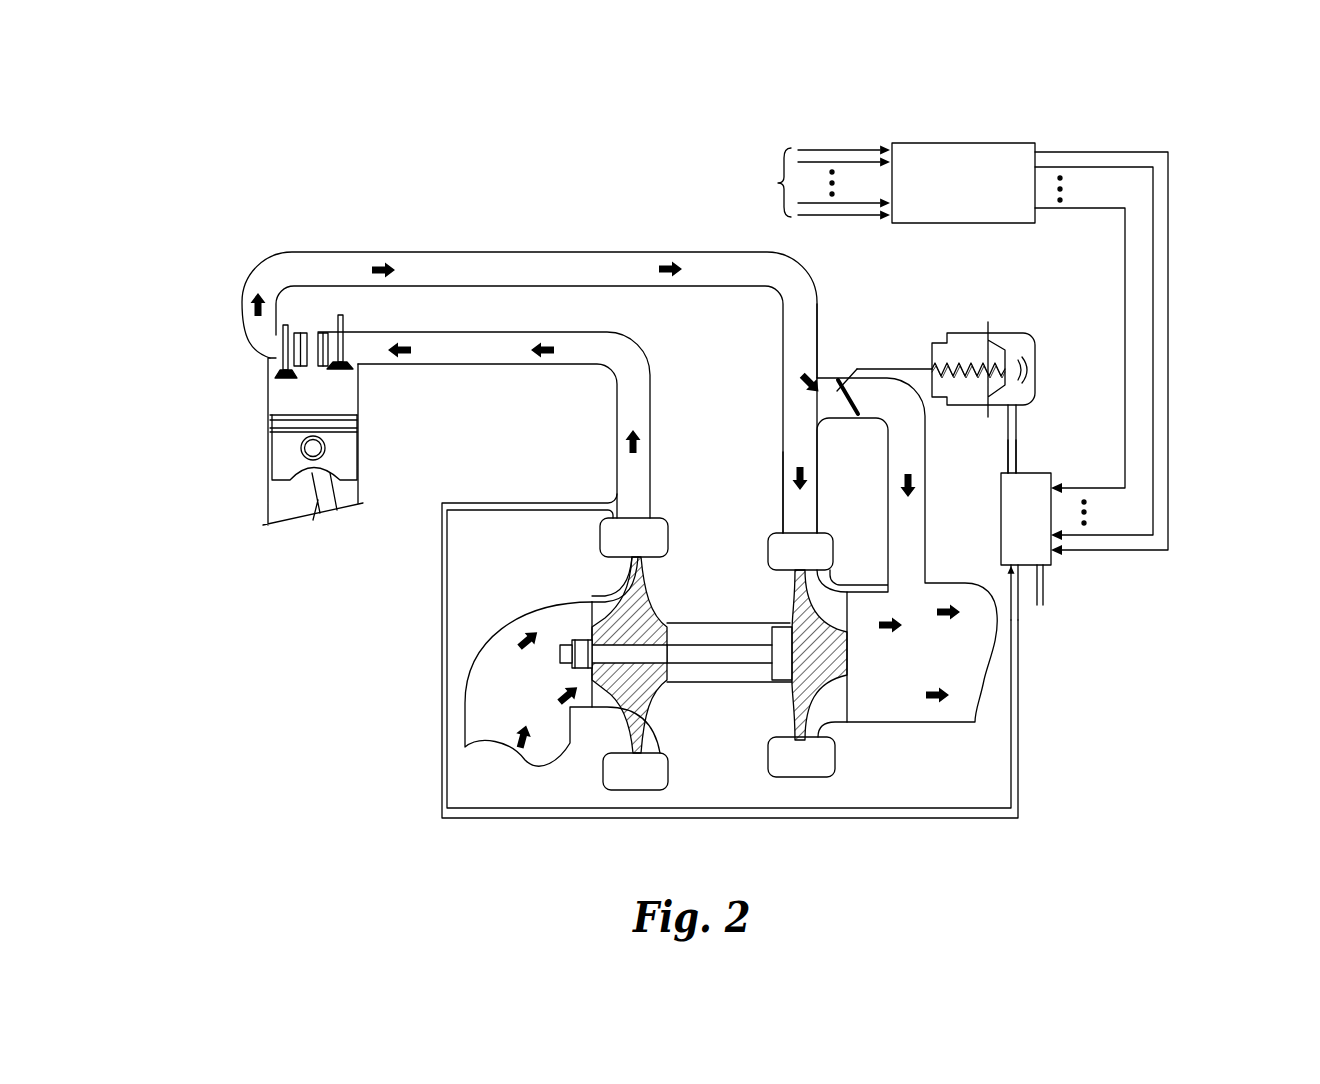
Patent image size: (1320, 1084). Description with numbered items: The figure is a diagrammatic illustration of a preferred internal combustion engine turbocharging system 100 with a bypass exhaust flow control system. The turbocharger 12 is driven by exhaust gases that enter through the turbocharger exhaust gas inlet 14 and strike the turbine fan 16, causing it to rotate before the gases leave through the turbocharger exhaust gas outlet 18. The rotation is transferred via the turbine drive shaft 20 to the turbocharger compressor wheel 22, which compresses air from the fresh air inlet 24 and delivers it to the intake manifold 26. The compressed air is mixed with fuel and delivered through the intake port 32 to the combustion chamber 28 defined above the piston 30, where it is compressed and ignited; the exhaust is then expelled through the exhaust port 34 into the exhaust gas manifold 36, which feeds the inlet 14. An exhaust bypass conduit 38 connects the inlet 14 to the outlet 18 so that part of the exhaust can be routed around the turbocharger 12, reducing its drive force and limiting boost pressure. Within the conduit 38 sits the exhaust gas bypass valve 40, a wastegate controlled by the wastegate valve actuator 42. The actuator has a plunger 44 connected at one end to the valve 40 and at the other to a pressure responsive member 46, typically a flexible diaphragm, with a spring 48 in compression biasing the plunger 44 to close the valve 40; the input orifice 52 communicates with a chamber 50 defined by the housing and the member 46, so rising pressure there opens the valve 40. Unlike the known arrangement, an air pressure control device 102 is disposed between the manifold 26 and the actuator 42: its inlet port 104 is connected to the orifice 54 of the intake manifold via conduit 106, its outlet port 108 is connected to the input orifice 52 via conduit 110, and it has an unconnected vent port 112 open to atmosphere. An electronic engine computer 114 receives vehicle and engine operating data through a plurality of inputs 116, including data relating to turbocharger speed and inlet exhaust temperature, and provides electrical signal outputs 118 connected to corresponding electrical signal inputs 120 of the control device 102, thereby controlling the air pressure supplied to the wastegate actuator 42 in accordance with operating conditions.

The turbocharger 12 is at (742, 686).
The turbocharger exhaust gas inlet 14 is at (783, 452).
The turbine fan 16 is at (790, 632).
The turbocharger exhaust gas outlet 18 is at (935, 665).
The turbine drive shaft 20 is at (705, 645).
The turbocharger compressor wheel 22 is at (660, 683).
The fresh air inlet 24 is at (518, 713).
The intake manifold 26 is at (650, 408).
The combustion chamber 28 is at (318, 393).
The piston 30 is at (336, 453).
The intake port 32 is at (350, 353).
The exhaust port 34 is at (276, 370).
The exhaust gas manifold 36 is at (518, 252).
The exhaust bypass conduit 38 is at (927, 460).
The exhaust gas bypass valve 40 is at (842, 380).
The wastegate valve actuator 42 is at (1037, 340).
The plunger 44 is at (905, 369).
The pressure responsive member 46 is at (1003, 355).
The spring 48 is at (967, 365).
The chamber 50 is at (1032, 378).
The input orifice 52 is at (1018, 414).
The orifice 54 is at (617, 497).
The internal combustion engine turbocharging system 100 is at (328, 204).
The air pressure control device 102 is at (1000, 527).
The inlet port 104 is at (1022, 568).
The conduit 106 is at (437, 632).
The outlet port 108 is at (1017, 470).
The conduit 110 is at (1006, 422).
The vent port 112 is at (1050, 568).
The electronic engine computer 114 is at (917, 143).
The inputs 116 is at (782, 187).
The electrical signal outputs 118 is at (1040, 152).
The electrical signal inputs 120 is at (1055, 485).